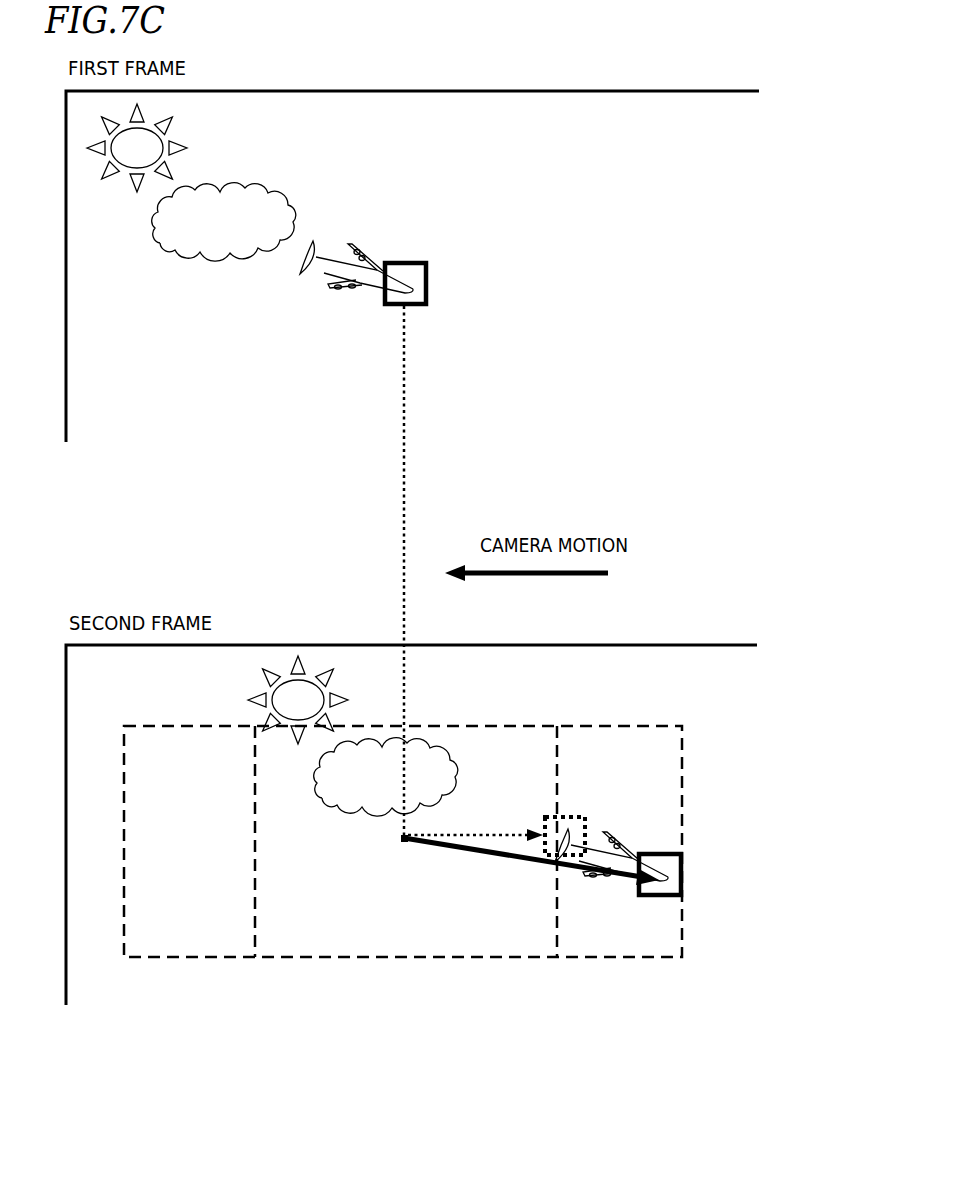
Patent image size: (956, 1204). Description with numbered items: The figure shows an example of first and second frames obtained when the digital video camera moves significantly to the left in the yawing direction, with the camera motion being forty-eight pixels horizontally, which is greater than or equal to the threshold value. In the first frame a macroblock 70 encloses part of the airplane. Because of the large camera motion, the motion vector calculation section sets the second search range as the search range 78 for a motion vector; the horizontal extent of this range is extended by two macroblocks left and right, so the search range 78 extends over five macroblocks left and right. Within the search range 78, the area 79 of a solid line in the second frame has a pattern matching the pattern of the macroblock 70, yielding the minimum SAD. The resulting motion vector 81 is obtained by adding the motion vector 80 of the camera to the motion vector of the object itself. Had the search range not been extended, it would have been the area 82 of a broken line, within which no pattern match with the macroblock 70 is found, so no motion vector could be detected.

The macroblock 70 is at (428, 262).
The search range for a motion vector 78 is at (682, 727).
The area of a solid line 79 is at (683, 864).
The motion vector of the camera 80 is at (482, 833).
The motion vector 81 is at (523, 858).
The area of a broken line 82 is at (313, 932).